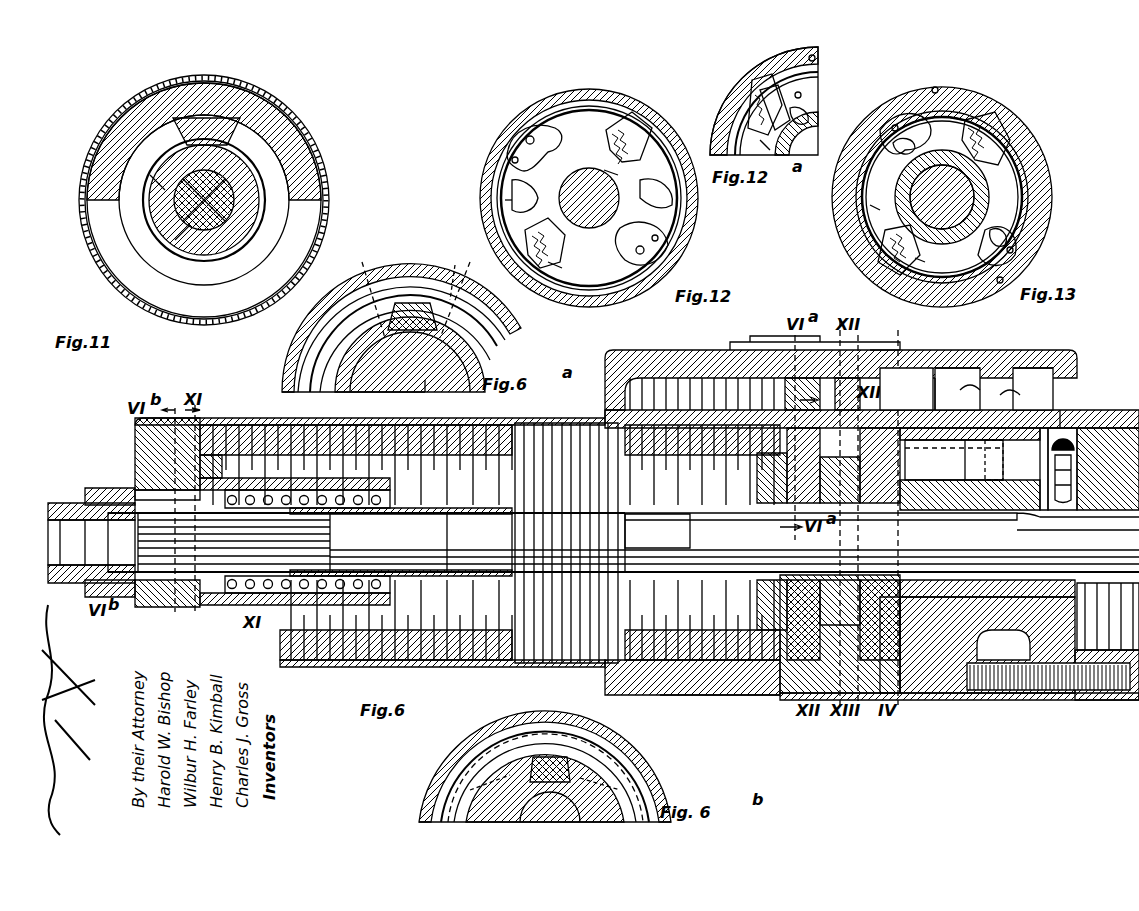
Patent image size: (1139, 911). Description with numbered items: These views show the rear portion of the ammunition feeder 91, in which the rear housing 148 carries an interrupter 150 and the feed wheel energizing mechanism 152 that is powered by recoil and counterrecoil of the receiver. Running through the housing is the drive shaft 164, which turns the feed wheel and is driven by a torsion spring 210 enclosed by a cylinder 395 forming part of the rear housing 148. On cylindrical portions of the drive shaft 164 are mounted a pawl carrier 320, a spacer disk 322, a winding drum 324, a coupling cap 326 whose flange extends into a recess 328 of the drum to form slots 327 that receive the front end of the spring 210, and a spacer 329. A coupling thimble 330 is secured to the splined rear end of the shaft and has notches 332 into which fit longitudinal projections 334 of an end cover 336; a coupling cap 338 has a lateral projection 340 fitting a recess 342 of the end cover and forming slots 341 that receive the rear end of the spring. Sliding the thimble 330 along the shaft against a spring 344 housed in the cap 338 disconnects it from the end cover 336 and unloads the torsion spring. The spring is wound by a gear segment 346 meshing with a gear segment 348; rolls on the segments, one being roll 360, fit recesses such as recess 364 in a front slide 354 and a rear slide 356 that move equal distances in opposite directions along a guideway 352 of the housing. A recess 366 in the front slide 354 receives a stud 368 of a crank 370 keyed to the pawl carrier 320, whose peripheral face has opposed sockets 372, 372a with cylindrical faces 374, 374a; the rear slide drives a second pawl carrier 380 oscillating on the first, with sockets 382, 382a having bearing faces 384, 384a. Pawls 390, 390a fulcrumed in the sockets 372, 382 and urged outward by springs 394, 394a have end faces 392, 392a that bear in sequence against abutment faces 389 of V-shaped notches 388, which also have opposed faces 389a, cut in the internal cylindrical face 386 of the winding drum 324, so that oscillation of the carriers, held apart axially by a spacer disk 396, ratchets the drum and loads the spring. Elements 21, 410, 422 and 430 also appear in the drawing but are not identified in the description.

In FIG. 6A, the feeder 91 is at (596, 403).
In FIG. 6A, the rear housing 148 is at (522, 340).
In FIG. 6, the rear housing 148 is at (1078, 356).
In FIG. 6B, the rear housing 148 is at (522, 714).
In FIG. 6, the interrupter 150 is at (1065, 430).
In FIG. 6, the feed wheel energizing mechanism 152 is at (686, 702).
In FIG. 11, the drive shaft 164 is at (212, 228).
In FIG. 6A, the drive shaft 164 is at (430, 392).
In FIG. 12, the drive shaft 164 is at (605, 225).
In FIG. 12A, the drive shaft 164 is at (796, 133).
In FIG. 13, the drive shaft 164 is at (968, 201).
In FIG. 6, the drive shaft 164 is at (623, 542).
In FIG. 6B, the drive shaft 164 is at (600, 818).
In FIG. 6, the casing 21 is at (1132, 391).
In FIG. 11, the torsion spring 210 is at (150, 145).
In FIG. 6A, the torsion spring 210 is at (300, 330).
In FIG. 6, the torsion spring 210 is at (305, 428).
In FIG. 6B, the torsion spring 210 is at (640, 768).
In FIG. 12, the pawl carrier 320 is at (505, 190).
In FIG. 12A, the pawl carrier 320 is at (812, 128).
In FIG. 6, the pawl carrier 320 is at (900, 512).
In FIG. 6, the spacer disk 322 is at (860, 544).
In FIG. 6A, the winding drum 324 is at (420, 360).
In FIG. 12, the winding drum 324 is at (482, 196).
In FIG. 12A, the winding drum 324 is at (713, 163).
In FIG. 13, the winding drum 324 is at (1052, 175).
In FIG. 6, the winding drum 324 is at (812, 510).
In FIG. 6, the coupling cap 326 is at (760, 505).
In FIG. 6A, the slots 327 is at (421, 289).
In FIG. 6A, the recess 328 is at (415, 305).
In FIG. 6, the recess 328 is at (780, 544).
In FIG. 6, the spacer 329 is at (657, 531).
In FIG. 11, the coupling thimble 330 is at (262, 183).
In FIG. 6, the coupling thimble 330 is at (62, 502).
In FIG. 11, the notches 332 is at (190, 228).
In FIG. 6, the notches 332 is at (301, 547).
In FIG. 11, the longitudinal projections 334 is at (165, 222).
In FIG. 6, the end cover 336 is at (140, 445).
In FIG. 11, the coupling cap 338 is at (272, 196).
In FIG. 6, the coupling cap 338 is at (350, 520).
In FIG. 6B, the coupling cap 338 is at (470, 795).
In FIG. 11, the lateral projection 340 is at (223, 120).
In FIG. 6, the lateral projection 340 is at (222, 428).
In FIG. 6B, the lateral projection 340 is at (552, 757).
In FIG. 6B, the slots 341 is at (605, 758).
In FIG. 6, the recess 342 is at (115, 489).
In FIG. 6B, the recess 342 is at (510, 776).
In FIG. 6, the spring 344 is at (345, 552).
In FIG. 6, the gear segment 346 is at (878, 350).
In FIG. 6, the gear segment 348 is at (650, 382).
In FIG. 6, the guideway 352 is at (1034, 383).
In FIG. 6, the front slide 354 is at (981, 459).
In FIG. 6, the rear slide 356 is at (957, 375).
In FIG. 6, the roll 360 is at (932, 377).
In FIG. 6, the recess 364 is at (954, 460).
In FIG. 6, the recess 366 is at (965, 395).
In FIG. 6, the stud 368 is at (1008, 460).
In FIG. 6, the crank 370 is at (1002, 383).
In FIG. 12, the sockets 372 is at (608, 165).
In FIG. 12, the sockets 372a is at (606, 190).
In FIG. 12A, the sockets 372a is at (808, 116).
In FIG. 12, the cylindrical face 374 is at (626, 180).
In FIG. 12, the cylindrical face 374a is at (525, 202).
In FIG. 12A, the cylindrical face 374a is at (764, 142).
In FIG. 13, the pawl carrier 380 is at (1022, 190).
In FIG. 6, the pawl carrier 380 is at (945, 512).
In FIG. 13, the sockets 382 is at (898, 212).
In FIG. 13, the sockets 382a is at (912, 142).
In FIG. 13, the cylindrical bearing face 384 is at (1012, 150).
In FIG. 13, the cylindrical bearing face 384a is at (870, 207).
In FIG. 12, the internal cylindrical face 386 is at (590, 106).
In FIG. 12A, the internal cylindrical face 386 is at (812, 78).
In FIG. 13, the internal cylindrical face 386 is at (975, 108).
In FIG. 6, the internal cylindrical face 386 is at (893, 665).
In FIG. 12, the V-shaped notches 388 is at (515, 140).
In FIG. 12A, the V-shaped notches 388 is at (757, 80).
In FIG. 13, the V-shaped notches 388 is at (888, 125).
In FIG. 6A, the abutment face 389 is at (490, 290).
In FIG. 12, the abutment face 389 is at (560, 125).
In FIG. 12A, the abutment face 389 is at (801, 95).
In FIG. 13, the abutment face 389 is at (1010, 130).
In FIG. 12, the abutment face 389a is at (655, 298).
In FIG. 12A, the abutment face 389a is at (815, 56).
In FIG. 13, the abutment face 389a is at (992, 298).
In FIG. 6A, the pawl 390 is at (466, 267).
In FIG. 12, the pawl 390 is at (650, 140).
In FIG. 12A, the pawl 390 is at (755, 125).
In FIG. 13, the pawl 390a is at (1000, 148).
In FIG. 12, the end face 392 is at (635, 114).
In FIG. 12A, the end face 392 is at (772, 72).
In FIG. 13, the end face 392a is at (995, 112).
In FIG. 12, the spring 394 is at (565, 265).
In FIG. 13, the spring 394a is at (941, 259).
In FIG. 6A, the cylinder 395 is at (360, 392).
In FIG. 6, the spacer disk 396 is at (895, 510).
In FIG. 6, the recess 410 is at (1048, 664).
In FIG. 6, the plate 422 is at (1050, 459).
In FIG. 6, the valve 430 is at (1066, 440).